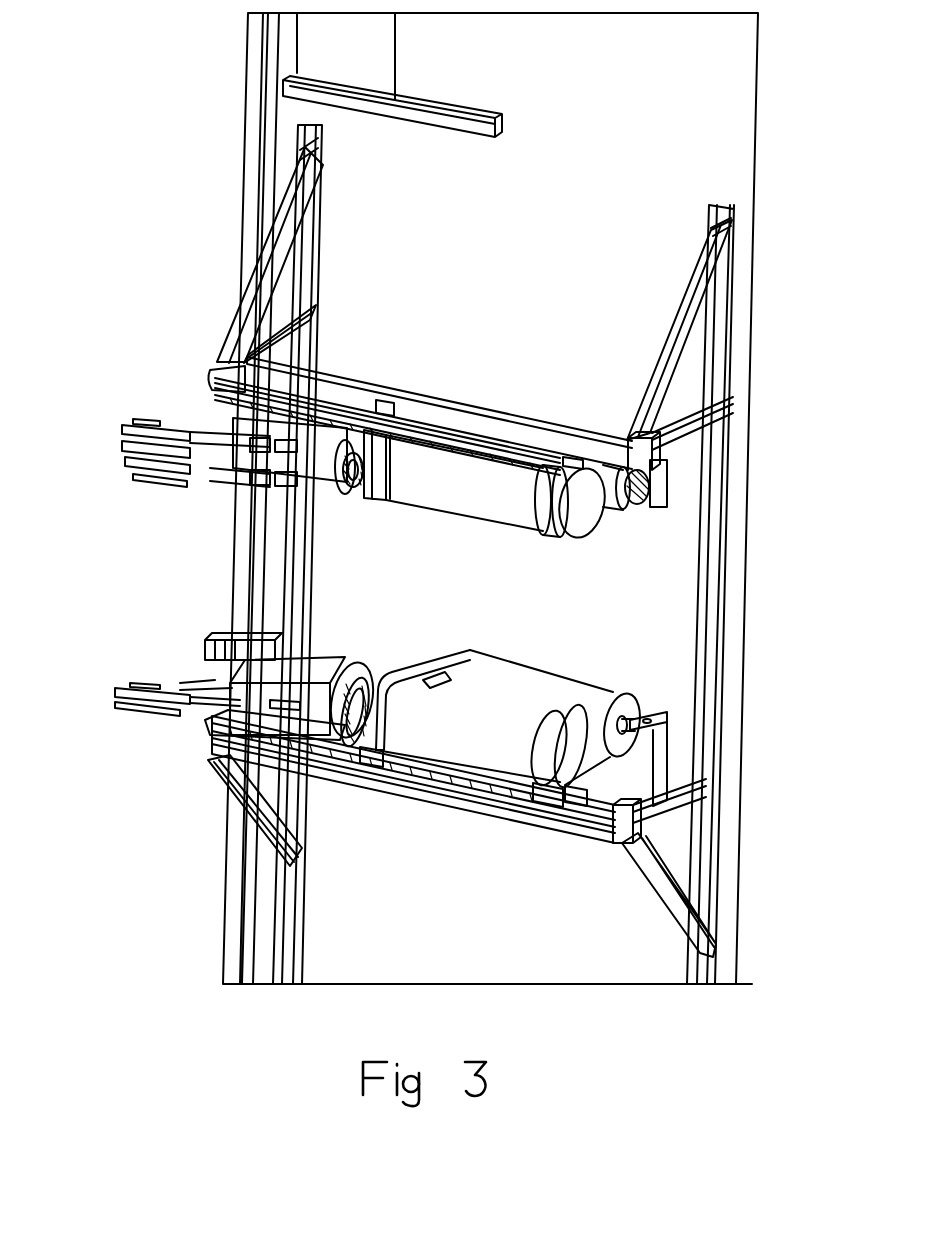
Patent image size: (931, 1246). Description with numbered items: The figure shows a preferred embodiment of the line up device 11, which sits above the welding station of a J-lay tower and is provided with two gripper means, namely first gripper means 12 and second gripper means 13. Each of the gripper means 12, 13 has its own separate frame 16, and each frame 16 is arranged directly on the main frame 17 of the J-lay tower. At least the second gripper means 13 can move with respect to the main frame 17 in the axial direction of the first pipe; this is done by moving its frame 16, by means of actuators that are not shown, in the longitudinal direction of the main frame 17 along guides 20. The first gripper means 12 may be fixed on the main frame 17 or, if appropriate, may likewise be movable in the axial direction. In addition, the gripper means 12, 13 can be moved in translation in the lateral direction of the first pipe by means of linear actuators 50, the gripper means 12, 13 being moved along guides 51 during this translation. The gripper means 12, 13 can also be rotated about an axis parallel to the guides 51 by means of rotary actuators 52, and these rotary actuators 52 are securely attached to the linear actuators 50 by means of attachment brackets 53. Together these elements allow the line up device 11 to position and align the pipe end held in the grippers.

The line up device 11 is at (89, 145).
The first gripper means 12 is at (125, 432).
The second gripper means 13 is at (145, 688).
The frame 16 is at (688, 325).
The main frame 17 is at (735, 95).
The guides 20 is at (300, 903).
The linear actuators 50 is at (670, 502).
The guides 51 is at (243, 383).
The rotary actuators 52 is at (330, 470).
The attachment brackets 53 is at (385, 410).